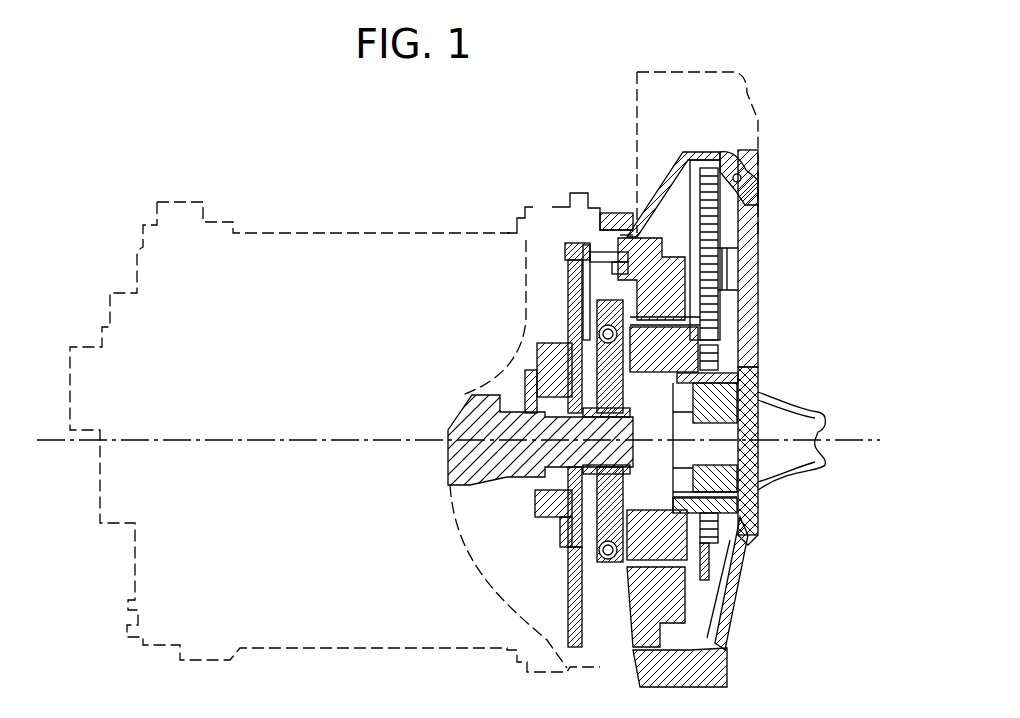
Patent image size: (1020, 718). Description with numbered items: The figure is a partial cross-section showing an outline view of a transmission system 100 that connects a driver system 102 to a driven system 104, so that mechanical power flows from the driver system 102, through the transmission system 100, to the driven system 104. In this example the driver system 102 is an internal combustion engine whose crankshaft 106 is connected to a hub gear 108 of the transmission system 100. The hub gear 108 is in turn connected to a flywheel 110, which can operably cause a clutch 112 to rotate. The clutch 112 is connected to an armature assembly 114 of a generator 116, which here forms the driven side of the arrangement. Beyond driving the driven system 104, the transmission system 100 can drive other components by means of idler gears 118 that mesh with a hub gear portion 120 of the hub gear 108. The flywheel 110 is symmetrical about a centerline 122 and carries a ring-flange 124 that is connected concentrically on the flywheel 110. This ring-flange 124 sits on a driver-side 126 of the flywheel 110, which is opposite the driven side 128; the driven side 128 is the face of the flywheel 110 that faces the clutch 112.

The transmission system 100 is at (795, 103).
The driver system 102 is at (772, 238).
The driven system 104 is at (265, 205).
The crankshaft 106 is at (767, 427).
The hub gear 108 is at (745, 530).
The flywheel 110 is at (702, 232).
The clutch 112 is at (605, 312).
The armature assembly 114 is at (468, 398).
The generator 116 is at (400, 290).
The idler gears 118 is at (713, 260).
The hub gear portion 120 is at (725, 557).
The centerline 122 is at (843, 440).
The ring-flange 124 is at (703, 610).
The driver-side 126 is at (718, 597).
The driven side 128 is at (630, 587).